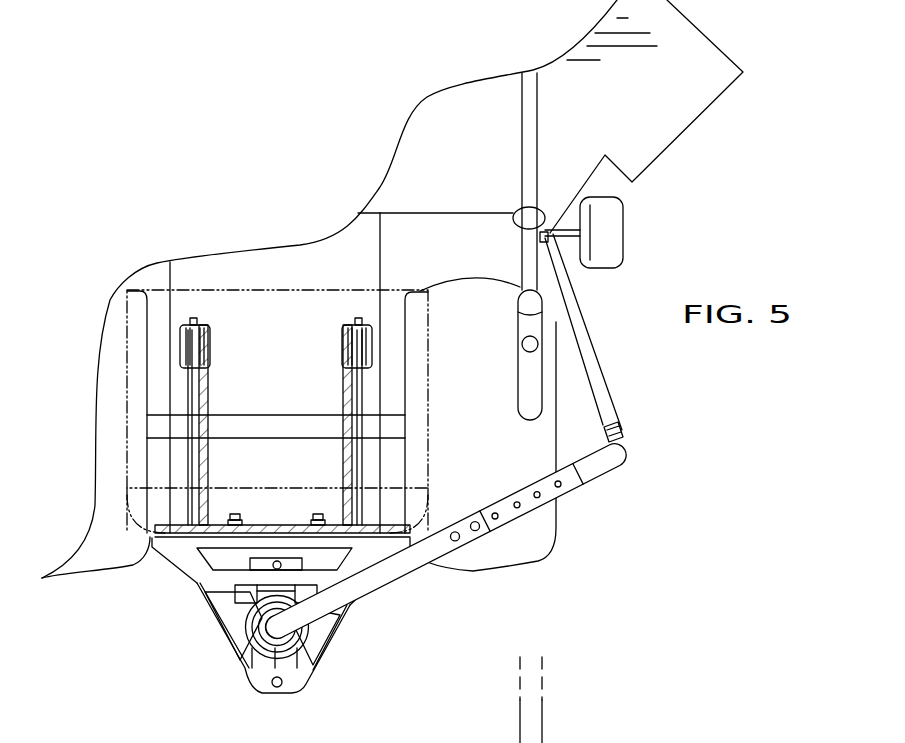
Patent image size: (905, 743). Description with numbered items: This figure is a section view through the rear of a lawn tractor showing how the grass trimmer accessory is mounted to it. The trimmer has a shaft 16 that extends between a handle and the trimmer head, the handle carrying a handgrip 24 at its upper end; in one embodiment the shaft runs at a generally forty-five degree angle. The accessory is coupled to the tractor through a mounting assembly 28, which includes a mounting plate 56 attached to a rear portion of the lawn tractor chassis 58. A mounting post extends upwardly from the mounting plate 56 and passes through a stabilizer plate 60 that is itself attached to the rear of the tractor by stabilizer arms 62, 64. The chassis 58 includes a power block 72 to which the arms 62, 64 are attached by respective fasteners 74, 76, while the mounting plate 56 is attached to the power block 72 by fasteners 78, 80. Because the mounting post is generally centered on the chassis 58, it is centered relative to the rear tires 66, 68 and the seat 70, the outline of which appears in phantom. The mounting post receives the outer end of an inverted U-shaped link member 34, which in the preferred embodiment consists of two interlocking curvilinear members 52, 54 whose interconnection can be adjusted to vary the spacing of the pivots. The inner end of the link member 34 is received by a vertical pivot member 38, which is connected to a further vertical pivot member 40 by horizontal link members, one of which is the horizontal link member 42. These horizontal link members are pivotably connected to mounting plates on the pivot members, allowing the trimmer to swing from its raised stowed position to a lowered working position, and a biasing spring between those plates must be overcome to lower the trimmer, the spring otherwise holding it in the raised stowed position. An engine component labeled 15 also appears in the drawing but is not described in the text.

The fuel tank 15 is at (710, 60).
The shaft 16 is at (530, 165).
The handgrip 24 is at (531, 389).
The mounting assembly 28 is at (279, 626).
The inverted U-shaped link member 34 is at (481, 535).
The vertical pivot member 38 is at (627, 448).
The vertical pivot member 40 is at (513, 216).
The horizontal link member 42 is at (594, 352).
The interlocking curvilinear member 52 is at (362, 585).
The interlocking curvilinear member 54 is at (530, 505).
The mounting plate 56 is at (290, 683).
The lawn tractor chassis 58 is at (261, 344).
The stabilizer plate 60 is at (182, 557).
The stabilizer arm 62 is at (190, 397).
The stabilizer arm 64 is at (361, 394).
The rear tire 66 is at (88, 555).
The rear tire 68 is at (512, 555).
The seat 70 is at (248, 290).
The power block 72 is at (204, 386).
The fastener 74 is at (182, 347).
The fastener 76 is at (373, 348).
The fastener 78 is at (235, 513).
The fastener 80 is at (318, 513).